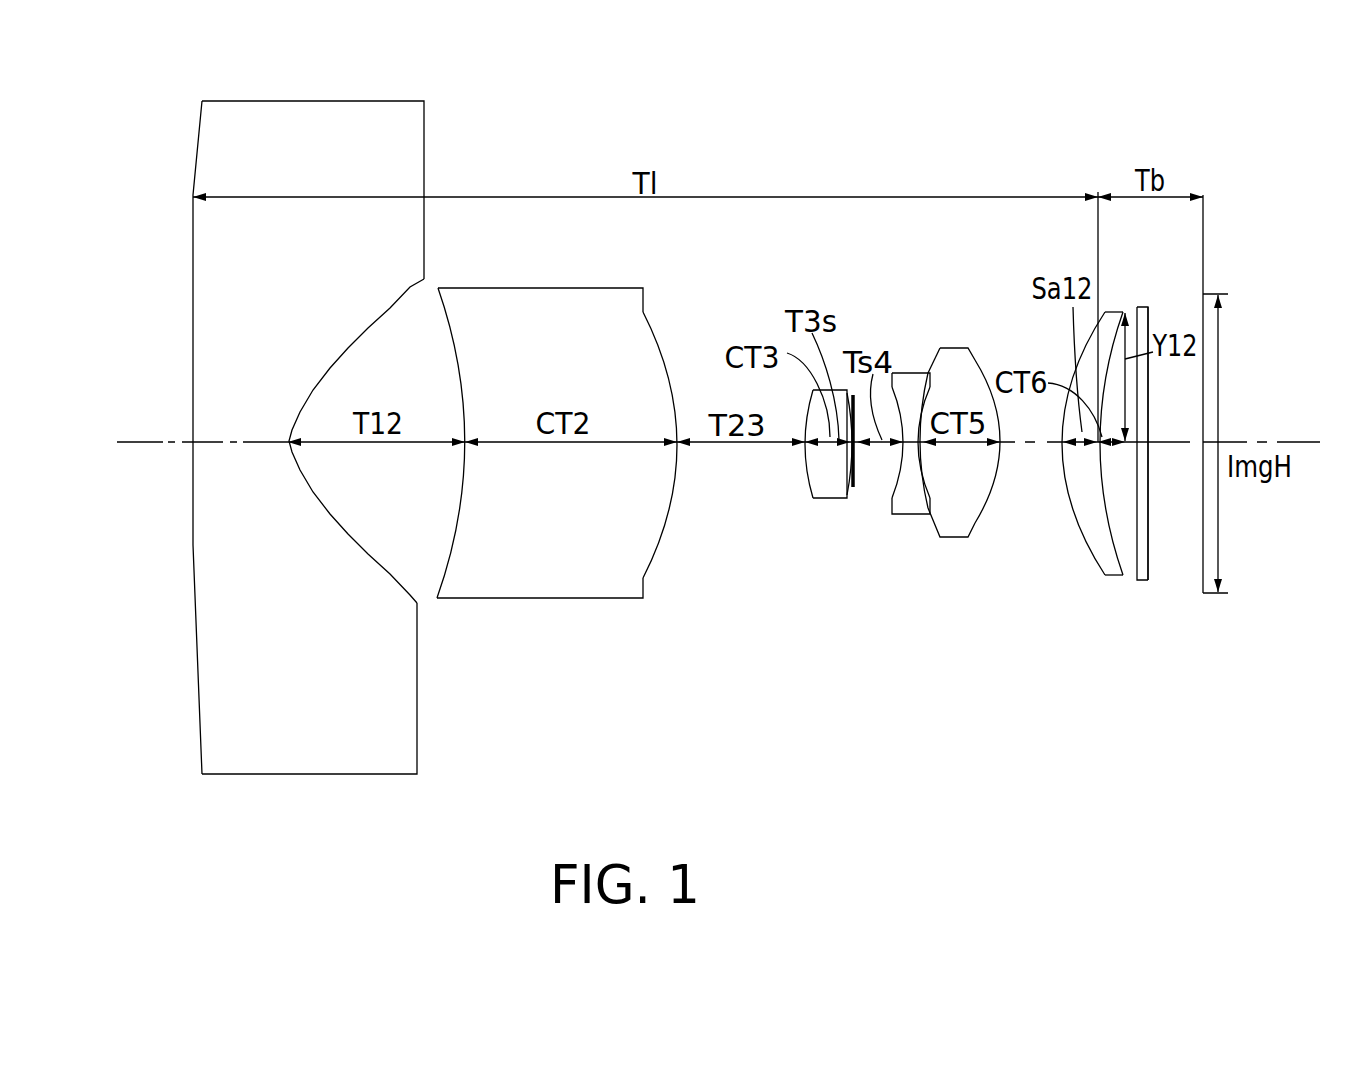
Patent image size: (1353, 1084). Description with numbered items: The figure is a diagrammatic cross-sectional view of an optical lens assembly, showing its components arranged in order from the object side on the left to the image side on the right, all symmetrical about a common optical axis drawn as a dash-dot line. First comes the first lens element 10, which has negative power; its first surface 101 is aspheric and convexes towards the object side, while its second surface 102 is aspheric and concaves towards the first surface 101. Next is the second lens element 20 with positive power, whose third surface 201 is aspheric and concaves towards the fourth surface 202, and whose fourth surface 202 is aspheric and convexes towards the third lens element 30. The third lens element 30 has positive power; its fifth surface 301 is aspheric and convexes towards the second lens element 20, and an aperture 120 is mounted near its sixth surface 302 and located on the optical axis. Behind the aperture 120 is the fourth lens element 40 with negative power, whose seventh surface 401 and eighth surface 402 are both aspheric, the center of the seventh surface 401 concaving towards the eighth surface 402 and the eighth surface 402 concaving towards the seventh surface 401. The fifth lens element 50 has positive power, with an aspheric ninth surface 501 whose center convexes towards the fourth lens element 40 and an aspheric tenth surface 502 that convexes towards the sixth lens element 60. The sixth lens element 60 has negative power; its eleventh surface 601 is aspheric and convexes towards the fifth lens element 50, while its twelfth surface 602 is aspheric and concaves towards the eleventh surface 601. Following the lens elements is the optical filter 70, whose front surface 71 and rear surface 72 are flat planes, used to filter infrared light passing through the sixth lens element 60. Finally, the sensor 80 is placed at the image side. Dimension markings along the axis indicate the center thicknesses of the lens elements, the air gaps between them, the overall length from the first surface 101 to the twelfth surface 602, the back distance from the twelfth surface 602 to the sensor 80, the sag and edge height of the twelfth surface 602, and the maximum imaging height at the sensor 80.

The first lens element 10 is at (258, 477).
The first surface 101 is at (193, 545).
The second surface 102 is at (353, 333).
The second lens element 20 is at (574, 485).
The third surface 201 is at (463, 394).
The fourth surface 202 is at (656, 345).
The third lens element 30 is at (780, 453).
The fifth surface 301 is at (805, 410).
The sixth surface 302 is at (850, 470).
The aperture 120 is at (860, 482).
The fourth lens element 40 is at (880, 446).
The seventh surface 401 is at (898, 480).
The eighth surface 402 is at (926, 385).
The fifth lens element 50 is at (950, 453).
The ninth surface 501 is at (937, 372).
The tenth surface 502 is at (982, 372).
The sixth lens element 60 is at (1062, 509).
The eleventh surface 601 is at (1075, 522).
The twelfth surface 602 is at (1097, 465).
The optical filter 70 is at (1154, 457).
The front surface 71 is at (1137, 547).
The rear surface 72 is at (1150, 555).
The sensor 80 is at (1203, 327).